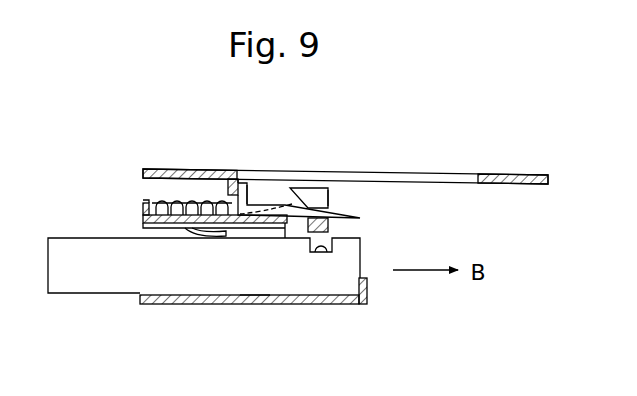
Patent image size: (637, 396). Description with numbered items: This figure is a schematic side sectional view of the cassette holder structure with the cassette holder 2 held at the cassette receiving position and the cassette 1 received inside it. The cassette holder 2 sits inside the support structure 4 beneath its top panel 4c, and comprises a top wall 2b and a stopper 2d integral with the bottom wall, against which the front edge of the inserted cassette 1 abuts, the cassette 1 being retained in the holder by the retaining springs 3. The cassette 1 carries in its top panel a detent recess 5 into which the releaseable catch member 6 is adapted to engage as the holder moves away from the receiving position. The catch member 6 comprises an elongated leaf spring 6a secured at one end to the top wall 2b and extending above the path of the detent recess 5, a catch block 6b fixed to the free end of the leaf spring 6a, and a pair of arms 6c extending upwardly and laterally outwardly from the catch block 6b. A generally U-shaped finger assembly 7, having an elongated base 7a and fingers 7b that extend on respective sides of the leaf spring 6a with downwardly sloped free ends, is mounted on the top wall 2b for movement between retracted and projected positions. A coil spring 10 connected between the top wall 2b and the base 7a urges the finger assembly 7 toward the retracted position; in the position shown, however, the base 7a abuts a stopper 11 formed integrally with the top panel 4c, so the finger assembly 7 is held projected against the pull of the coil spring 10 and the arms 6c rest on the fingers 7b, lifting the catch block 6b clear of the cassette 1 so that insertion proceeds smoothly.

The cassette 1 is at (83, 278).
The cassette holder 2 is at (228, 305).
The top wall 2b is at (255, 308).
The stopper 2d is at (367, 287).
The retaining springs 3 is at (196, 240).
The support structure 4 is at (485, 171).
The top panel 4c is at (522, 172).
The detent recess 5 is at (318, 252).
The releaseable catch member 6 is at (310, 182).
The leaf spring 6a is at (274, 202).
The catch block 6b is at (328, 228).
The arms 6c is at (324, 196).
The finger assembly 7 is at (353, 205).
The base 7a is at (240, 181).
The fingers 7b is at (258, 198).
The coil spring 10 is at (168, 185).
The stopper 11 is at (212, 193).